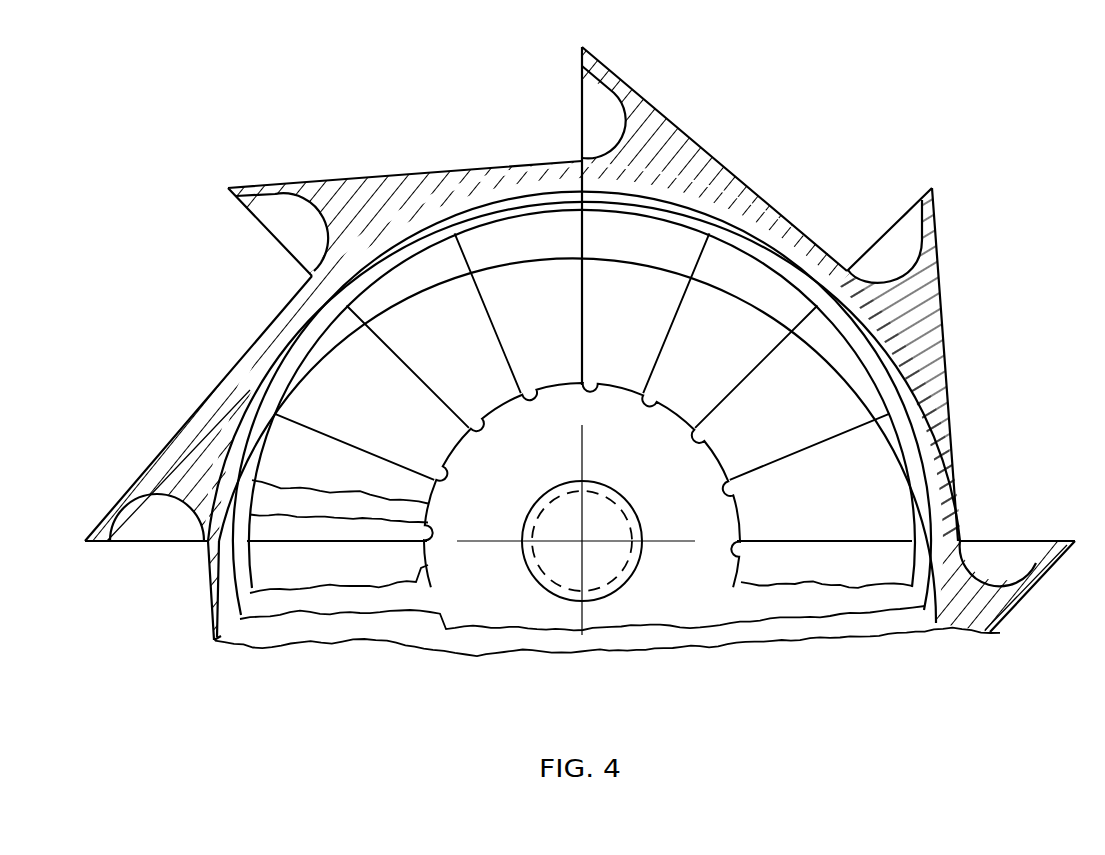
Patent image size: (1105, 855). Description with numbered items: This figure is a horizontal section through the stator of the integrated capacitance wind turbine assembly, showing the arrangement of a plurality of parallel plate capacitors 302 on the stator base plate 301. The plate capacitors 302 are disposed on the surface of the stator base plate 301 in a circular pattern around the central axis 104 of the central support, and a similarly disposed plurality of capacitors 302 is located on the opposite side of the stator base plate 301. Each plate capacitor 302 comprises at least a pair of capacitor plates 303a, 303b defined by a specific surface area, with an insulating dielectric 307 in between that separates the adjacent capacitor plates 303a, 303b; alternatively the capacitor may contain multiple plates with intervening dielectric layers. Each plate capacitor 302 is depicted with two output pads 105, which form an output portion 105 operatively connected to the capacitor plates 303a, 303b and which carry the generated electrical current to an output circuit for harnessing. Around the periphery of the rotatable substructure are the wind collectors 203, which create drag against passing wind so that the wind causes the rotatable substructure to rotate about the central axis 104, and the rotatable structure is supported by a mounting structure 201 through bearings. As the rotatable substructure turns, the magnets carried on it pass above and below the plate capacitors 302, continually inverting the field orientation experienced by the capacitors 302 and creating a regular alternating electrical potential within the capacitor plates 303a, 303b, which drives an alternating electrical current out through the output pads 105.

The central axis 104 is at (585, 543).
The output pads 105 is at (428, 530).
The mounting structure 201 is at (222, 640).
The wind collectors 203 is at (578, 92).
The stator base plate 301 is at (853, 617).
The plate capacitors 302 is at (630, 205).
The capacitor plate 303a is at (290, 527).
The capacitor plate 303b is at (360, 478).
The dielectric 307 is at (323, 507).